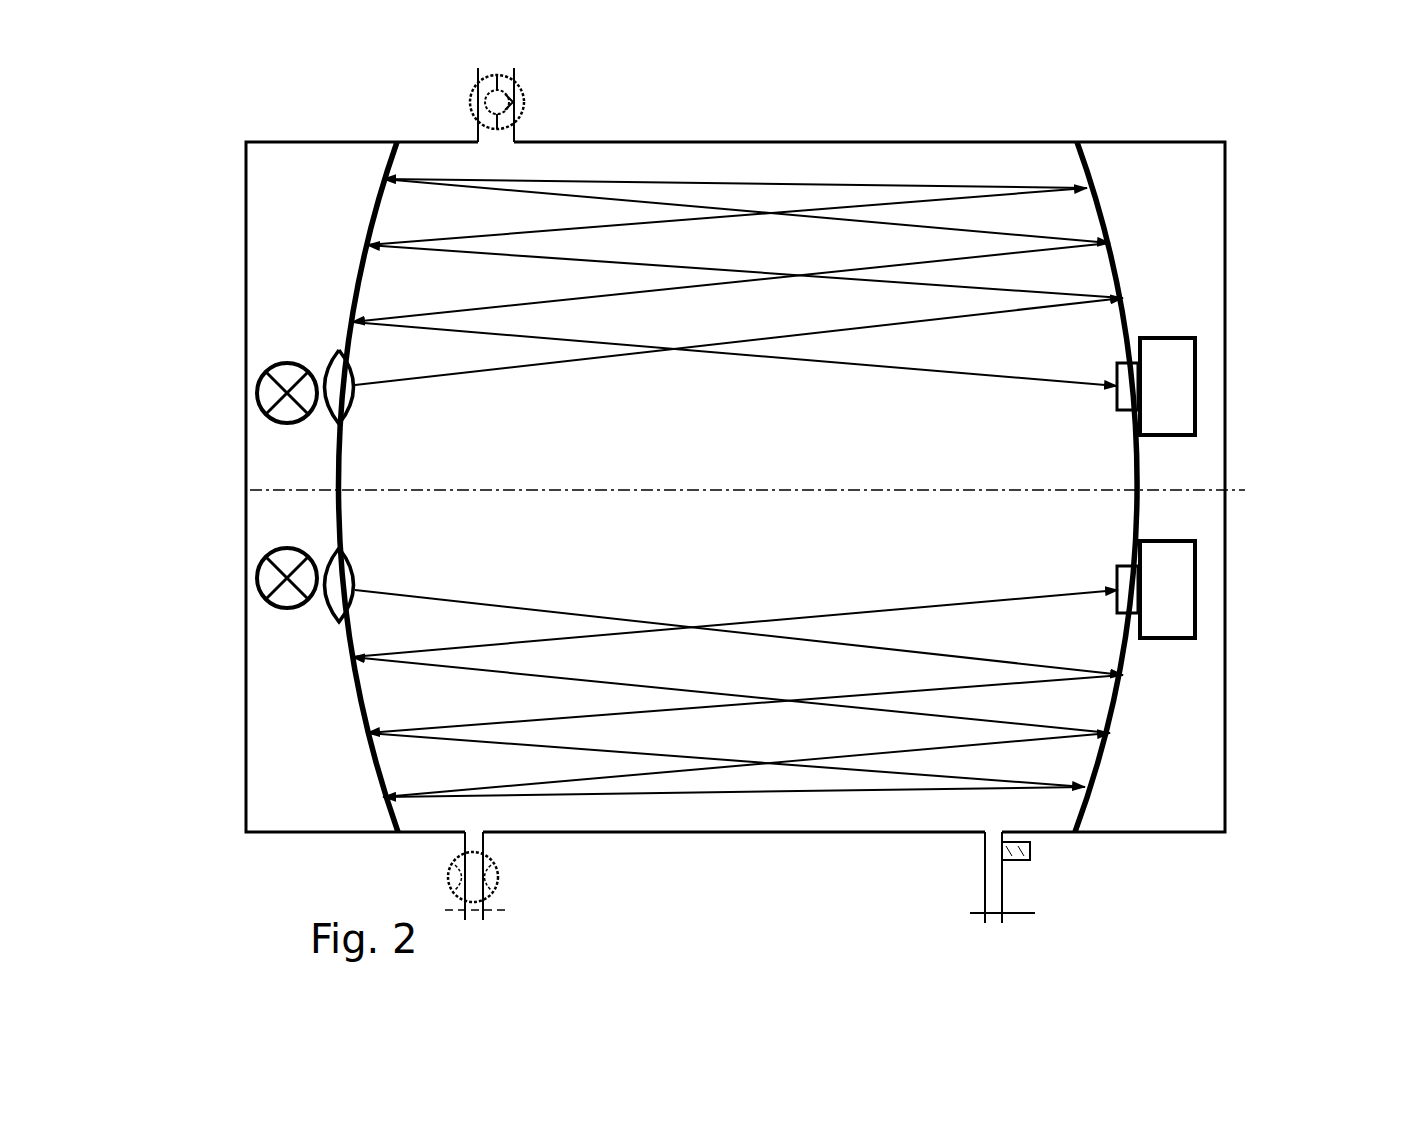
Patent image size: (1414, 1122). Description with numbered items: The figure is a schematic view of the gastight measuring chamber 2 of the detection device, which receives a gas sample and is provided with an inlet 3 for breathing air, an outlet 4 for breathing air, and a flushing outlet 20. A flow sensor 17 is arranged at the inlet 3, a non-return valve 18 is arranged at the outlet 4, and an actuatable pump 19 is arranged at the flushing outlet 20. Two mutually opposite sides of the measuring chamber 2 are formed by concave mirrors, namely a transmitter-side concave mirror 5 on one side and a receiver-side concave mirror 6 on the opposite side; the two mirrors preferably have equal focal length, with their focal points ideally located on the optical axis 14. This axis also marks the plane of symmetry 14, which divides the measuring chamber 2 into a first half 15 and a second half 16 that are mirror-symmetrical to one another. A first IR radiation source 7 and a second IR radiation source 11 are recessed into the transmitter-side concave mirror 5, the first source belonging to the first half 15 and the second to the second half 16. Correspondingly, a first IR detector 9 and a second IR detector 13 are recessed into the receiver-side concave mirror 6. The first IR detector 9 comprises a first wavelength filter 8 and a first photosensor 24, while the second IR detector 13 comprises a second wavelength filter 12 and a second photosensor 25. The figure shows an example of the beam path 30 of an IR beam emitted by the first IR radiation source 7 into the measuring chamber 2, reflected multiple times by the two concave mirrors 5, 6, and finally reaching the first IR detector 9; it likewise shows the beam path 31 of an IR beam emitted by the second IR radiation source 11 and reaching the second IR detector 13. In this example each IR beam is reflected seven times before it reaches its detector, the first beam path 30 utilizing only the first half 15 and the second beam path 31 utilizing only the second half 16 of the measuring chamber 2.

The measuring chamber 2 is at (726, 838).
The inlet 3 is at (990, 862).
The outlet 4 is at (492, 139).
The transmitter-side concave mirror 5 is at (341, 283).
The receiver-side concave mirror 6 is at (1110, 214).
The first IR radiation source 7 is at (263, 370).
The first wavelength filter 8 is at (1130, 379).
The first IR detector 9 is at (1256, 352).
The second IR radiation source 11 is at (280, 606).
The second wavelength filter 12 is at (1132, 599).
The second IR detector 13 is at (1258, 692).
The plane of symmetry and optical axis 14 is at (224, 492).
The first half of the measuring chamber 15 is at (418, 456).
The second half of the measuring chamber 16 is at (400, 540).
The flow sensor 17 is at (1015, 853).
The non-return valve 18 is at (495, 101).
The actuatable pump 19 is at (458, 880).
The flushing outlet 20 is at (462, 840).
The first photosensor 24 is at (1173, 366).
The second photosensor 25 is at (1178, 581).
The beam path 30 is at (918, 222).
The beam path 31 is at (922, 751).